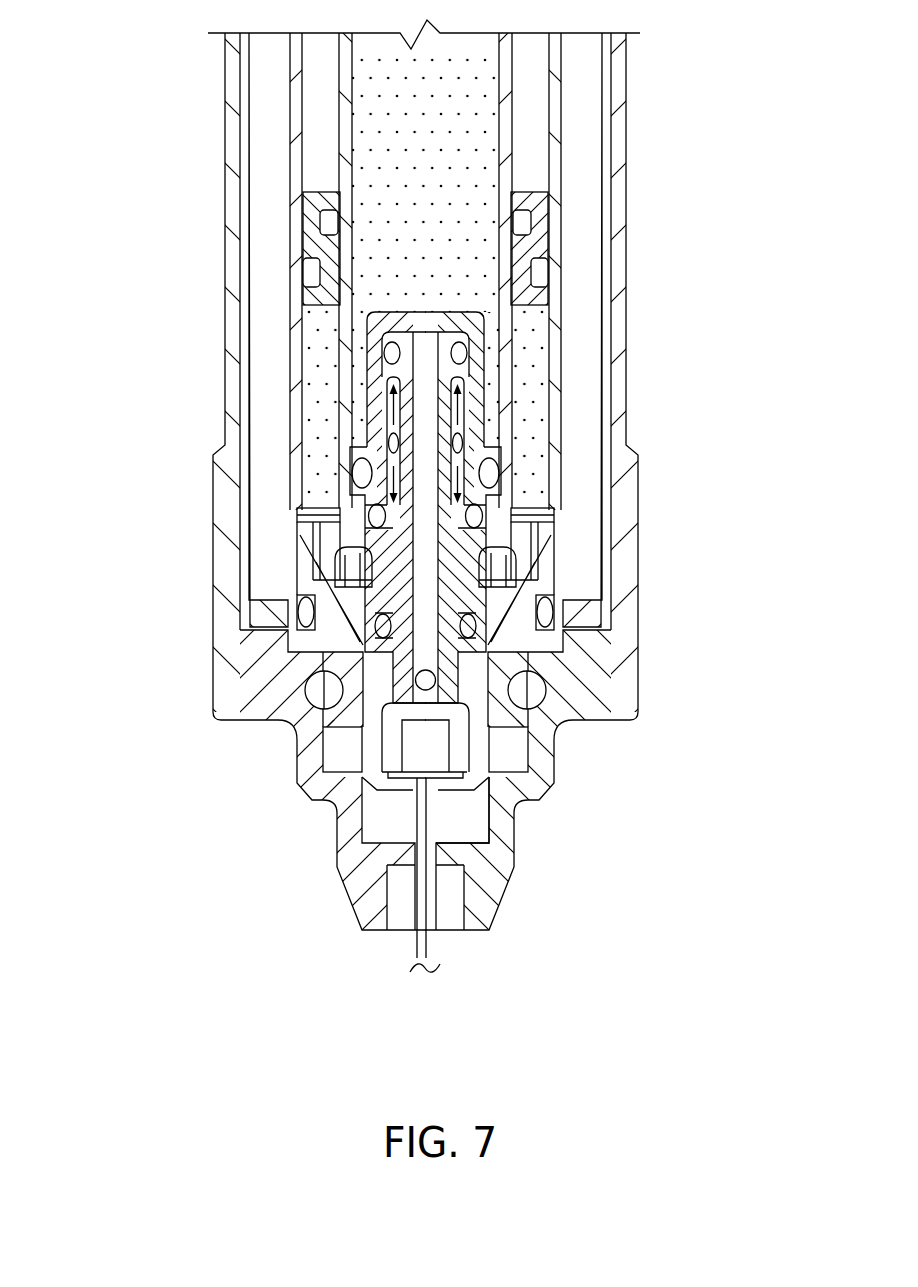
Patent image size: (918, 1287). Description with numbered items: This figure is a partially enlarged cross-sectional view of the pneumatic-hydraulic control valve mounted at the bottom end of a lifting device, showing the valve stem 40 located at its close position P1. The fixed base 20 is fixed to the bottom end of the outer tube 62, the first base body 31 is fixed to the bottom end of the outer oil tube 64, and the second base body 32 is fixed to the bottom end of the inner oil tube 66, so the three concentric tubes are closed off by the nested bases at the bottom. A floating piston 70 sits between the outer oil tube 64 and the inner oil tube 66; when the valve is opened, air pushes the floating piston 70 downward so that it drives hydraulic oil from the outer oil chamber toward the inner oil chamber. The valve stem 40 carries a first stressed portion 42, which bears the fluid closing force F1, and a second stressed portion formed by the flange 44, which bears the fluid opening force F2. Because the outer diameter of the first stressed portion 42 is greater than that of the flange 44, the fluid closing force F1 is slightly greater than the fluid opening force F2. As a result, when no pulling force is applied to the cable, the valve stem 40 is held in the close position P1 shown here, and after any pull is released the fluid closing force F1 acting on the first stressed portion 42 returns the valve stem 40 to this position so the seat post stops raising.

The outer tube 62 is at (234, 72).
The outer oil tube 64 is at (298, 133).
The floating piston 70 is at (305, 238).
The inner oil tube 66 is at (349, 355).
The second base body 32 is at (440, 298).
The first stressed portion 42 is at (462, 371).
The flange 44 is at (470, 516).
The first base body 31 is at (322, 502).
The fixed base 20 is at (265, 745).
The valve stem 40 is at (378, 811).
The close position P1 is at (466, 820).
The fluid closing force F1 is at (426, 404).
The fluid opening force F2 is at (426, 484).